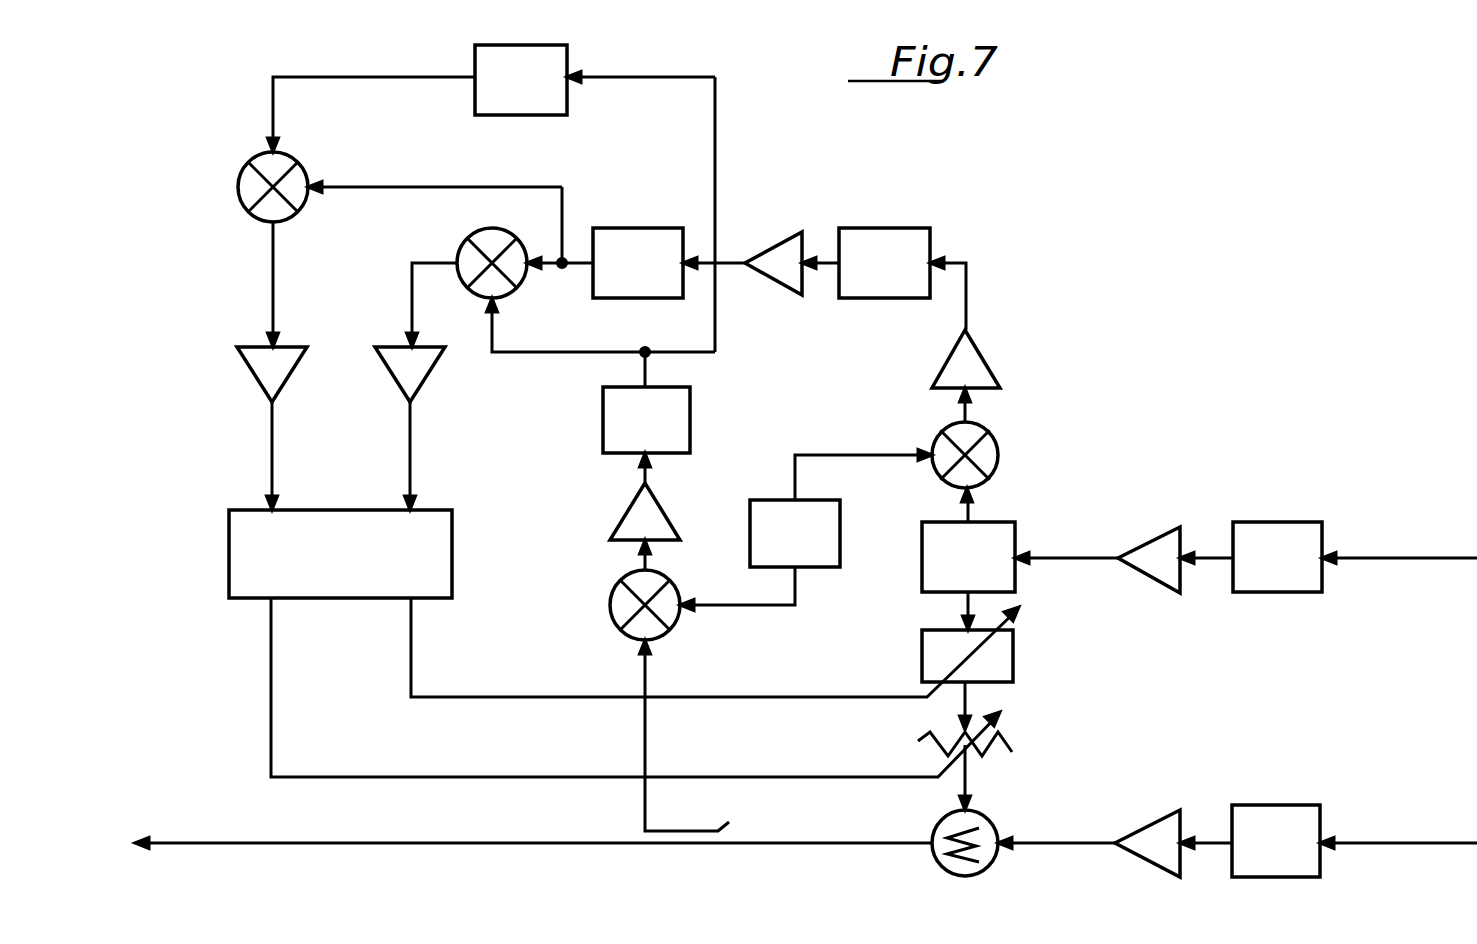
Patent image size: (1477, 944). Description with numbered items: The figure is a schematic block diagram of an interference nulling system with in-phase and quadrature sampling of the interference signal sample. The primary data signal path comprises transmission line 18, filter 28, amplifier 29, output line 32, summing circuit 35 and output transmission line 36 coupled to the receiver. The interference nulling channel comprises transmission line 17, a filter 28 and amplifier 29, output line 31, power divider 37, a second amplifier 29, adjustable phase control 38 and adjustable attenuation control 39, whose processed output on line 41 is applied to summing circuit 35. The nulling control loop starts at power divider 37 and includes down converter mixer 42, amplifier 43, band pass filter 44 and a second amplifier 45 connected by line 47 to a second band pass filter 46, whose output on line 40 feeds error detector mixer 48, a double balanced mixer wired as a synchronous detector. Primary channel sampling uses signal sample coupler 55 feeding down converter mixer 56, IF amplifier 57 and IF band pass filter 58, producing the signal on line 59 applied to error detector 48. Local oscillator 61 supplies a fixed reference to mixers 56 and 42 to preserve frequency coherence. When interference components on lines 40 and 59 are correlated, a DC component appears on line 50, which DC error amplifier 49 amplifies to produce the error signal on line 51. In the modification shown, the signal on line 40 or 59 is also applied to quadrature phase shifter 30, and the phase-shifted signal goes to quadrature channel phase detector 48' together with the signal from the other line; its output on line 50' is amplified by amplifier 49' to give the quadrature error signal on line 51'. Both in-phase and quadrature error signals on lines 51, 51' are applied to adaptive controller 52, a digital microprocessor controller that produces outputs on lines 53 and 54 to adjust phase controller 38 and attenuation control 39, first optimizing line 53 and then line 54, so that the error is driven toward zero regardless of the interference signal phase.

The transmission line 17 is at (1368, 558).
The transmission line 18 is at (1358, 843).
The filter 28 is at (1275, 522).
The amplifier 29 is at (1160, 528).
The quadrature phase shifter 30 is at (527, 115).
The output line 31 is at (1080, 558).
The output line 32 is at (1055, 843).
The summing circuit 35 is at (941, 823).
The output transmission line 36 is at (545, 843).
The power divider 37 is at (922, 573).
The adjustable phase control 38 is at (922, 656).
The adjustable attenuation control 39 is at (918, 741).
The output line 40 is at (427, 187).
The line 41 is at (970, 782).
The down converter mixer 42 is at (998, 456).
The amplifier 43 is at (983, 365).
The band pass filter 44 is at (878, 229).
The second amplifier 45 is at (781, 240).
The second band pass filter 46 is at (628, 229).
The line 47 is at (736, 265).
The error detector mixer 48 is at (469, 257).
The quadrature channel phase detector 48' is at (238, 187).
The DC error amplifier 49 is at (429, 376).
The DC error amplifier 49' is at (251, 375).
The line 50 is at (404, 305).
The line 50' is at (246, 284).
The line 51 is at (436, 456).
The line 51' is at (240, 456).
The adaptive controller 52 is at (229, 556).
The line 53 is at (411, 652).
The line 54 is at (271, 652).
The signal sample coupler 55 is at (690, 831).
The down converter mixer 56 is at (610, 605).
The IF amplifier 57 is at (621, 513).
The IF band pass filter 58 is at (690, 416).
The line 59 is at (548, 352).
The local oscillator 61 is at (767, 500).